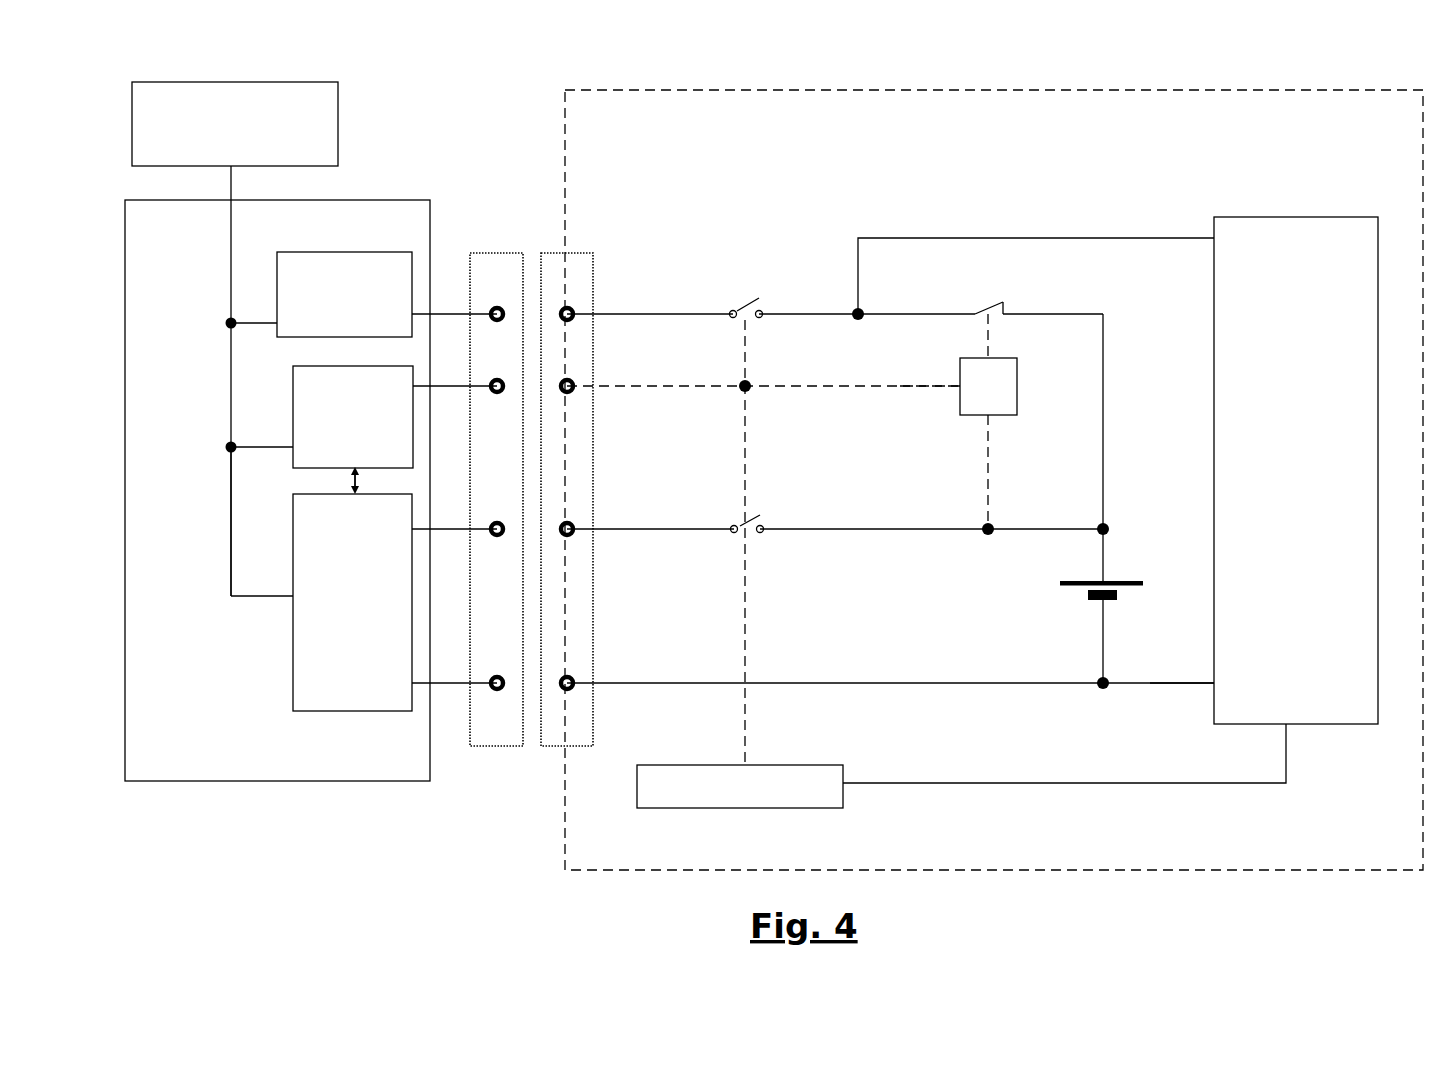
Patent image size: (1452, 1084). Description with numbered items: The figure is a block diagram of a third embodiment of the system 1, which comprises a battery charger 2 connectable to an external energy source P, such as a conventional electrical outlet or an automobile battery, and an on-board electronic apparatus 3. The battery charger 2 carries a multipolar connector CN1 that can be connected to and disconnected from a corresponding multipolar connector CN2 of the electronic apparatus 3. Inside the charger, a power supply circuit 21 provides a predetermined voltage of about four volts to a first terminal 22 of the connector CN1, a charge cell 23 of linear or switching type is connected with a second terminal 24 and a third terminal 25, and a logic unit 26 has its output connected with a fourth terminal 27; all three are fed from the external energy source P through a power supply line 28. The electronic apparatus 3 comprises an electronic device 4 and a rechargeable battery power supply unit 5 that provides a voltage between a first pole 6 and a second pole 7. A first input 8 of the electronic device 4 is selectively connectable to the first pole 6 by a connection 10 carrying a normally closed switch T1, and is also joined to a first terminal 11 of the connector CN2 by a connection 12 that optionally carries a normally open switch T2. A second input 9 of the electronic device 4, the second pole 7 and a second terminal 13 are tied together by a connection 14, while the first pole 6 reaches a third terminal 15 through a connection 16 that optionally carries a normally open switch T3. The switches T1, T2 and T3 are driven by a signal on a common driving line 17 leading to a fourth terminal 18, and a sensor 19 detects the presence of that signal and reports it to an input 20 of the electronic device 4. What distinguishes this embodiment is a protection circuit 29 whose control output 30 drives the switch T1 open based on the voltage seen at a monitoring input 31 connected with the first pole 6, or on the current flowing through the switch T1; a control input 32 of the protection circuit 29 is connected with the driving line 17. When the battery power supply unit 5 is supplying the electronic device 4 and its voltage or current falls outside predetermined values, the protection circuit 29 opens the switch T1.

The system 1 is at (244, 906).
The battery charger 2 is at (277, 517).
The electronic apparatus 3 is at (977, 498).
The electronic device 4 is at (1296, 495).
The battery power supply unit 5 is at (1062, 606).
The first pole 6 is at (1127, 507).
The second pole 7 is at (1077, 694).
The first input 8 is at (1033, 251).
The second input 9 is at (1182, 702).
The connection 10 is at (1088, 421).
The first terminal 11 is at (612, 283).
The connection 12 is at (712, 277).
The second terminal 13 is at (607, 704).
The connection 14 is at (890, 657).
The third terminal 15 is at (606, 507).
The connection 16 is at (835, 553).
The driving line 17 is at (763, 542).
The fourth terminal 18 is at (607, 404).
The sensor 19 is at (786, 795).
The input 20 is at (1064, 753).
The power supply circuit 21 is at (364, 278).
The first terminal 22 is at (464, 242).
The charge cell 23 is at (358, 605).
The second terminal 24 is at (405, 770).
The third terminal 25 is at (467, 554).
The logic unit 26 is at (364, 410).
The fourth terminal 27 is at (467, 415).
The power supply line 28 is at (190, 523).
The protection circuit 29 is at (1017, 411).
The control output 30 is at (1025, 336).
The monitoring input 31 is at (953, 475).
The control input 32 is at (930, 368).
The external energy source P is at (261, 338).
The multipolar connector CN1 is at (473, 544).
The multipolar connector CN2 is at (533, 560).
The normally closed switch T1 is at (965, 293).
The normally open switch T2 is at (775, 274).
The normally open switch T3 is at (791, 503).